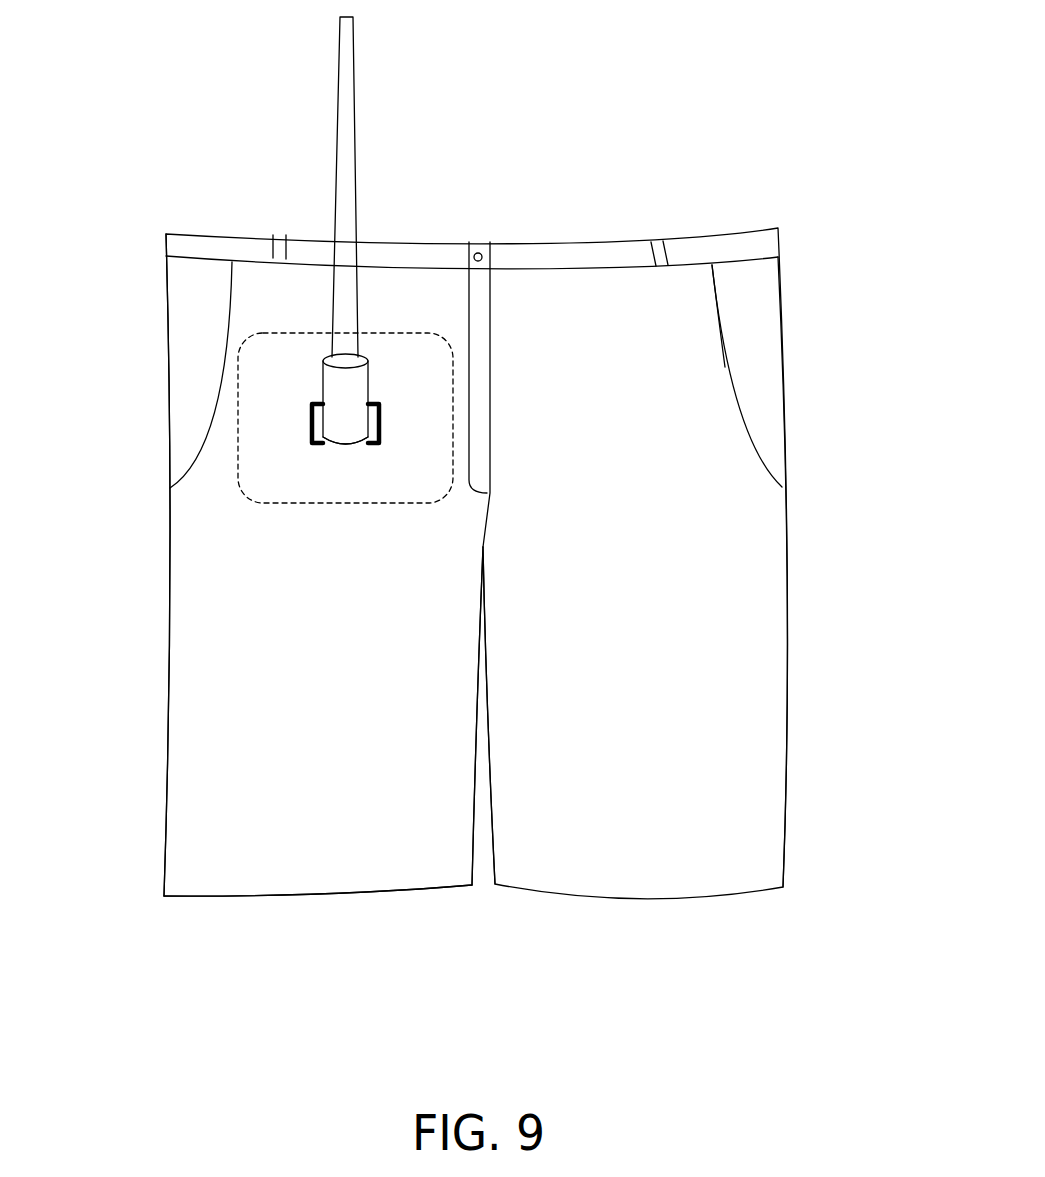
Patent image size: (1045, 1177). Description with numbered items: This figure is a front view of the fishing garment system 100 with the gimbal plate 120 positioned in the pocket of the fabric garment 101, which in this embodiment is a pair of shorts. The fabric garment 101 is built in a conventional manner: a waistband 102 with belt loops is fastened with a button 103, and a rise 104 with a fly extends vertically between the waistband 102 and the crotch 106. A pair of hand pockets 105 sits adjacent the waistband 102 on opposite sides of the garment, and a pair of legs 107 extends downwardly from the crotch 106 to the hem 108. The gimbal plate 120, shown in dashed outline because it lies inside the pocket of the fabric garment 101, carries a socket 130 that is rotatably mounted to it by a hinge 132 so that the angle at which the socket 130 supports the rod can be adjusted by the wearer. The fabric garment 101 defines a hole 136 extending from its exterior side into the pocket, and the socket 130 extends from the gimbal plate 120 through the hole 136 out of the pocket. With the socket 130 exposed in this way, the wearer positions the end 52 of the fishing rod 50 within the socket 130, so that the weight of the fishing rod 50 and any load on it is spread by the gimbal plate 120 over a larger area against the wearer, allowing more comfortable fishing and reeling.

The fishing rod 50 is at (353, 170).
The end of fishing rod 52 is at (378, 354).
The fishing garment system 100 is at (800, 207).
The fabric garment 101 is at (788, 608).
The waistband 102 is at (177, 245).
The button 103 is at (478, 252).
The rise 104 is at (640, 410).
The hand pockets 105 is at (725, 367).
The crotch 106 is at (494, 540).
The legs 107 is at (243, 732).
The hem 108 is at (145, 895).
The gimbal plate 120 is at (240, 483).
The socket 130 is at (345, 390).
The hinge 132 is at (379, 444).
The hole 136 is at (330, 462).